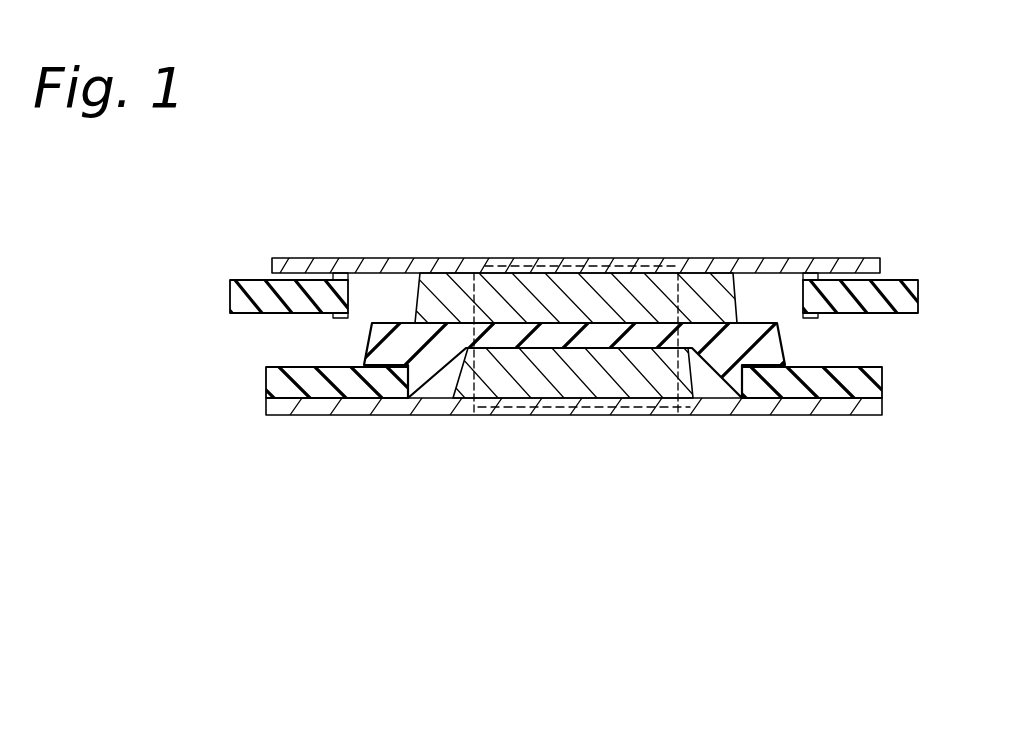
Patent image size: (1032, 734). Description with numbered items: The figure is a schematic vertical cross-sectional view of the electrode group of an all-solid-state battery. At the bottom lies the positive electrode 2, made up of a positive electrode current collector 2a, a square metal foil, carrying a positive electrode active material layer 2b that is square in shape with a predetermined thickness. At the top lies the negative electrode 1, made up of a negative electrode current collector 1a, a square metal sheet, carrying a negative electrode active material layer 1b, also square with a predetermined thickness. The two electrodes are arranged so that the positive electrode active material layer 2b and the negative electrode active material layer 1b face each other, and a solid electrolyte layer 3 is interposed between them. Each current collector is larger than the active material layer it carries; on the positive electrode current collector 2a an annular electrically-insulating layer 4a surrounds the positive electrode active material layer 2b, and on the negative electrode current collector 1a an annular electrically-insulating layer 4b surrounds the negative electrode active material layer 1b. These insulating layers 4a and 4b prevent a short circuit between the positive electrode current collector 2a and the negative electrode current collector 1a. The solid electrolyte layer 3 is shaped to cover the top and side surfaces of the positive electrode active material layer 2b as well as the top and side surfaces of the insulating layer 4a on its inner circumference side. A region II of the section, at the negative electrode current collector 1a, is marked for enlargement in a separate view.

The negative electrode 1 is at (568, 210).
The negative electrode current collector 1a is at (503, 262).
The negative electrode active material layer 1b is at (553, 298).
The positive electrode 2 is at (605, 467).
The positive electrode current collector 2a is at (525, 405).
The positive electrode active material layer 2b is at (595, 385).
The solid electrolyte layer 3 is at (690, 338).
The annular electrically-insulating layer 4a is at (325, 392).
The annular electrically-insulating layer 4b is at (313, 293).
The region II is at (652, 262).